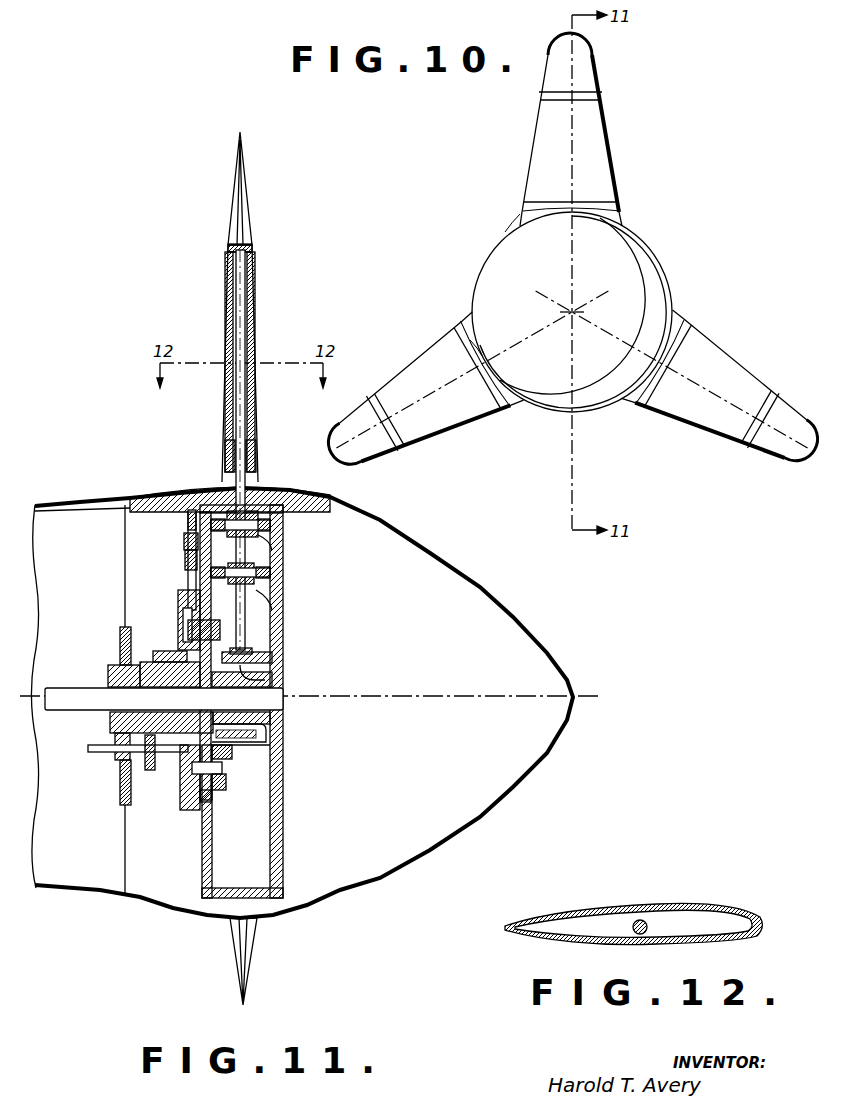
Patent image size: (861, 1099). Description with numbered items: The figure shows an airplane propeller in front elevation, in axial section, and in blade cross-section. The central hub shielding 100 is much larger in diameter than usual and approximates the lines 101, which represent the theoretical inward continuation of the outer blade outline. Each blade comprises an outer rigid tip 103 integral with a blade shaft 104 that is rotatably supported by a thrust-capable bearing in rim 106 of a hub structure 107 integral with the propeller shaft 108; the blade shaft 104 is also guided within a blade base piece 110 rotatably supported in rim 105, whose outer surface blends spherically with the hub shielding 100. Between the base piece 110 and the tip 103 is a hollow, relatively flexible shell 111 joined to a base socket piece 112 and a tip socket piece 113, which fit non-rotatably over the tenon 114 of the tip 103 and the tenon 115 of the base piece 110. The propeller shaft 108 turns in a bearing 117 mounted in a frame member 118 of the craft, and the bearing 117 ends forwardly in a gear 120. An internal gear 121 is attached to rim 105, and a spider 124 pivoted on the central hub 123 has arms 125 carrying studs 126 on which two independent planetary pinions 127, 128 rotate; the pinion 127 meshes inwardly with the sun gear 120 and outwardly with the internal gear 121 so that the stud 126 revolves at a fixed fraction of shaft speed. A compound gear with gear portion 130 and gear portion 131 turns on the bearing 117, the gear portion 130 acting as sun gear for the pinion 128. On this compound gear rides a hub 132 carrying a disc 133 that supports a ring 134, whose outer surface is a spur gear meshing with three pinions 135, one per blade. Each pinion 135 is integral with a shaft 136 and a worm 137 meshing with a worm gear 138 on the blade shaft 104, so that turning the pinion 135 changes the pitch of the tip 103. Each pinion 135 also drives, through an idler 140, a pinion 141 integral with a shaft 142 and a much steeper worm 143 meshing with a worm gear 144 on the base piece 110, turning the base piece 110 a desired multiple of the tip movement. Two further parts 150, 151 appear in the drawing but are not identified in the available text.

In FIG. 10, the hub shielding 100 is at (672, 284).
In FIG. 11, the hub shielding 100 is at (420, 542).
In FIG. 10, the lines 101 is at (505, 228).
In FIG. 10, the tip 103 is at (596, 50).
In FIG. 11, the tip 103 is at (250, 210).
In FIG. 11, the blade shaft 104 is at (246, 326).
In FIG. 12, the blade shaft 104 is at (650, 918).
In FIG. 11, the rim 105 is at (284, 516).
In FIG. 11, the rim 106 is at (272, 655).
In FIG. 11, the hub structure 107 is at (284, 758).
In FIG. 11, the propeller shaft 108 is at (284, 705).
In FIG. 10, the blade base piece 110 is at (595, 211).
In FIG. 11, the blade base piece 110 is at (188, 492).
In FIG. 10, the shell 111 is at (604, 139).
In FIG. 11, the shell 111 is at (230, 322).
In FIG. 12, the shell 111 is at (702, 946).
In FIG. 10, the base socket piece 112 is at (619, 206).
In FIG. 11, the base socket piece 112 is at (254, 463).
In FIG. 10, the tip socket piece 113 is at (597, 93).
In FIG. 11, the tip socket piece 113 is at (252, 252).
In FIG. 11, the tenon 114 is at (228, 249).
In FIG. 11, the tenon 115 is at (230, 466).
In FIG. 11, the bearing 117 is at (114, 720).
In FIG. 11, the frame member 118 is at (140, 660).
In FIG. 11, the gear 120 is at (222, 752).
In FIG. 11, the internal gear 121 is at (203, 836).
In FIG. 11, the central hub 123 is at (266, 730).
In FIG. 11, the spider 124 is at (222, 645).
In FIG. 11, the arm 125 is at (216, 784).
In FIG. 11, the stud 126 is at (216, 770).
In FIG. 11, the planetary pinion 127 is at (210, 798).
In FIG. 11, the planetary pinion 128 is at (180, 792).
In FIG. 11, the gear portion 130 is at (190, 636).
In FIG. 11, the gear portion 131 is at (120, 630).
In FIG. 11, the hub 132 is at (160, 772).
In FIG. 11, the disc 133 is at (183, 610).
In FIG. 11, the ring 134 is at (178, 598).
In FIG. 11, the pinion 135 is at (186, 565).
In FIG. 11, the shaft 136 is at (270, 580).
In FIG. 11, the worm 137 is at (270, 574).
In FIG. 11, the worm gear 138 is at (272, 608).
In FIG. 11, the idler 140 is at (184, 541).
In FIG. 11, the pinion 141 is at (188, 517).
In FIG. 11, the shaft 142 is at (270, 530).
In FIG. 11, the worm 143 is at (272, 492).
In FIG. 11, the worm gear 144 is at (272, 548).
In FIG. 11, the control rod 150 is at (120, 752).
In FIG. 11, the lever 151 is at (120, 782).